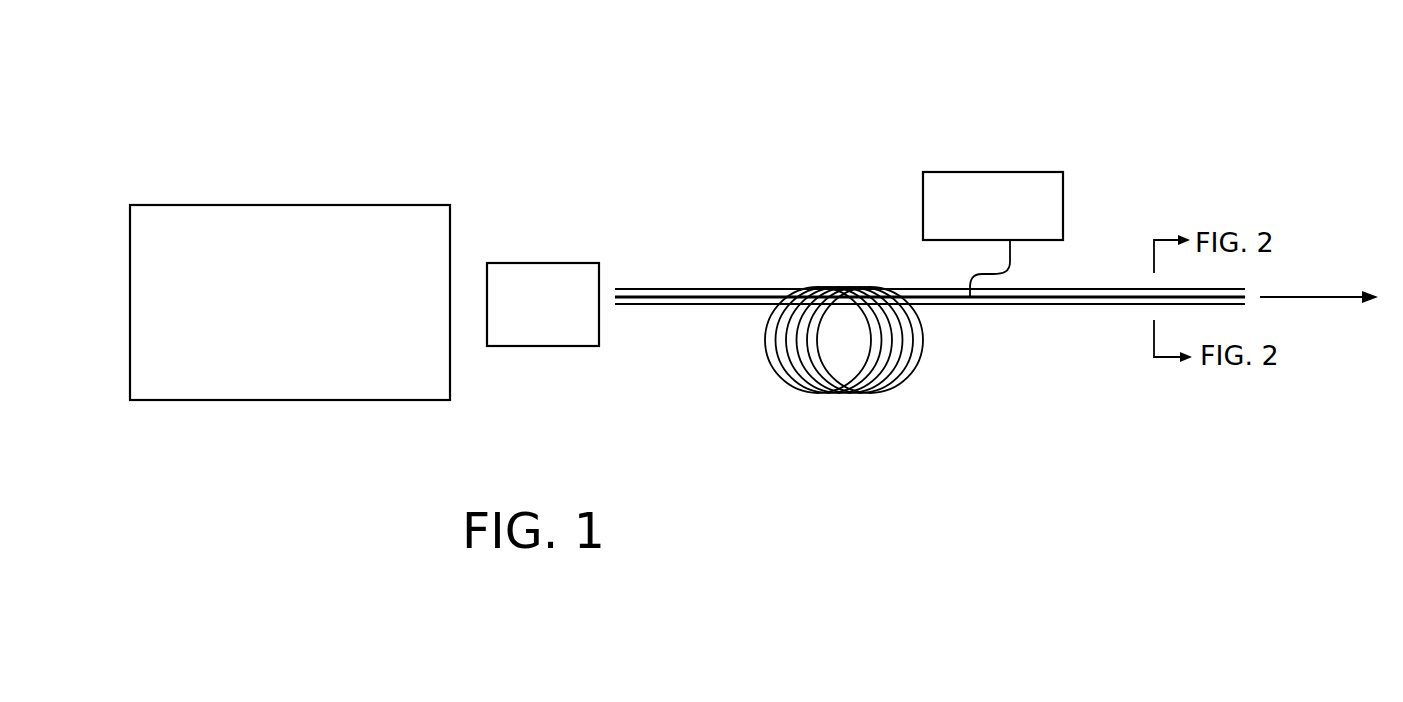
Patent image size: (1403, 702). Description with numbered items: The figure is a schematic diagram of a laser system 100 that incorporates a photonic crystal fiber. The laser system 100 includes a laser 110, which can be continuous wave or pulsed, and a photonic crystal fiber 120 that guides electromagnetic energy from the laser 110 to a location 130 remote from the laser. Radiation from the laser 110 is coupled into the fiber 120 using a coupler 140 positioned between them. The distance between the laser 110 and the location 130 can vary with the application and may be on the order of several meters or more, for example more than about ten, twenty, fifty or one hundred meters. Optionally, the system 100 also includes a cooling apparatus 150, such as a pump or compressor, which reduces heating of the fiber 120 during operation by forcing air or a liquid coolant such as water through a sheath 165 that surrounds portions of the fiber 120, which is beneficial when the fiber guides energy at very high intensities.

The laser system 100 is at (432, 114).
The laser 110 is at (364, 283).
The photonic crystal fiber 120 is at (708, 309).
The location 130 is at (1302, 296).
The coupler 140 is at (571, 315).
The cooling apparatus 150 is at (1025, 221).
The sheath 165 is at (1038, 288).